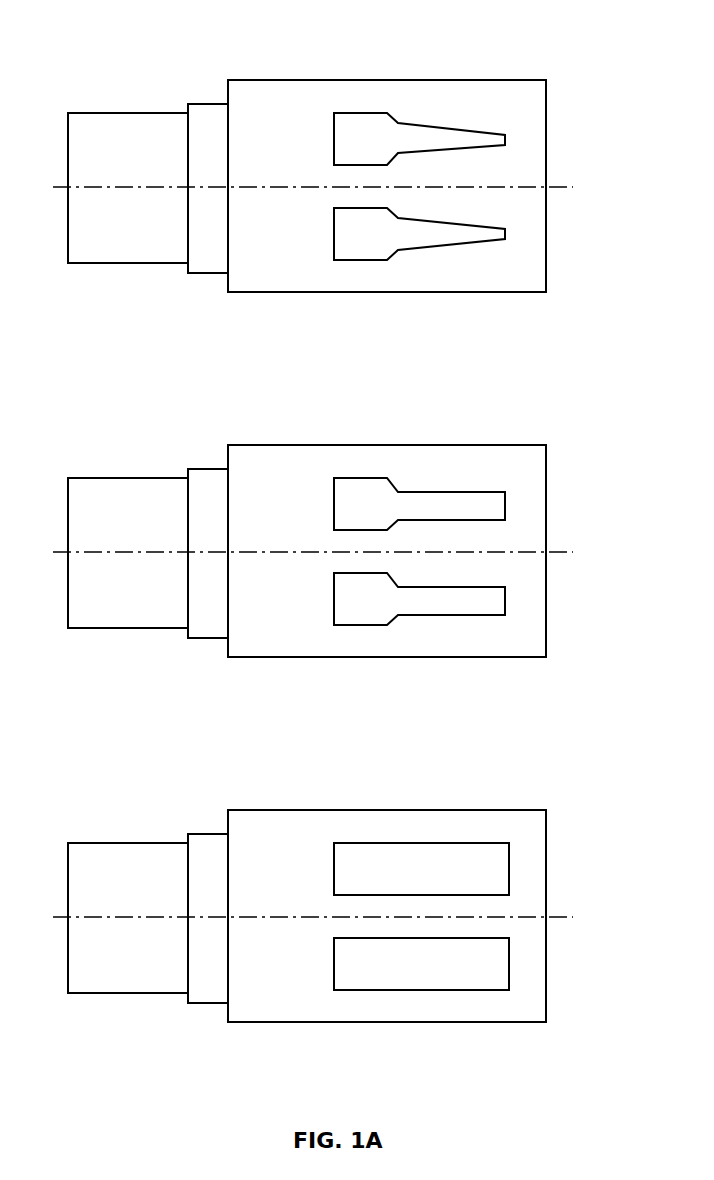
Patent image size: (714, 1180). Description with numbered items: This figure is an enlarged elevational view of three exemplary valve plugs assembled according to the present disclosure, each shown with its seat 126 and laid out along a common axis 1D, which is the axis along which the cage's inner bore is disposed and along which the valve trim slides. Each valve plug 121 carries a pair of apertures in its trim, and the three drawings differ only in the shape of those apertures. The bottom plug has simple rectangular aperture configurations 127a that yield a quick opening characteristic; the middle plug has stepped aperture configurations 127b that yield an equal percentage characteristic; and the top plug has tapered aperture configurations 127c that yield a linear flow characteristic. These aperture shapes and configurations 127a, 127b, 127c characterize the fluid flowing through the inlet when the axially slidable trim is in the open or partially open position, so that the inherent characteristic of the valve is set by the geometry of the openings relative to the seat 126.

The valve plug 121 is at (122, 127).
The seat 126 is at (463, 92).
The axis 1D is at (332, 551).
The aperture configuration (linear flow) 127c is at (453, 142).
The aperture configuration (equal percentage) 127b is at (476, 595).
The aperture configuration (quick opening) 127a is at (475, 960).